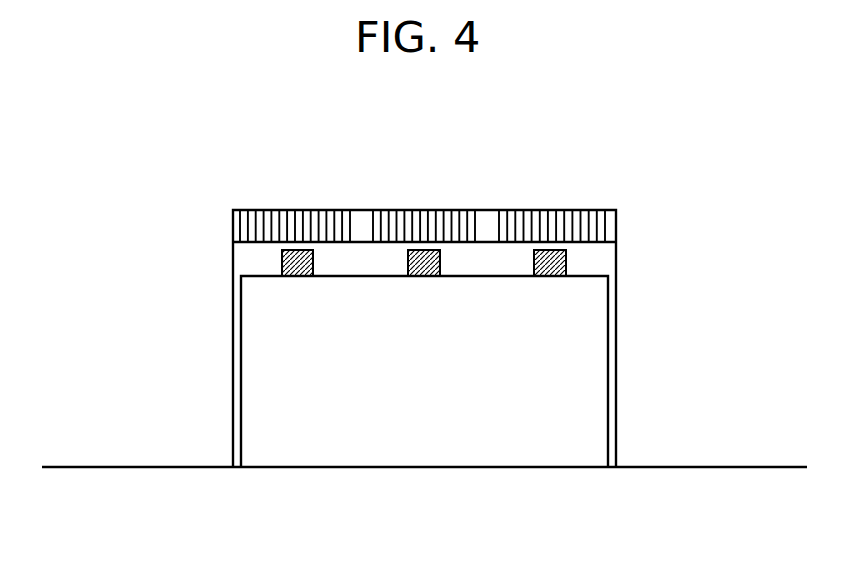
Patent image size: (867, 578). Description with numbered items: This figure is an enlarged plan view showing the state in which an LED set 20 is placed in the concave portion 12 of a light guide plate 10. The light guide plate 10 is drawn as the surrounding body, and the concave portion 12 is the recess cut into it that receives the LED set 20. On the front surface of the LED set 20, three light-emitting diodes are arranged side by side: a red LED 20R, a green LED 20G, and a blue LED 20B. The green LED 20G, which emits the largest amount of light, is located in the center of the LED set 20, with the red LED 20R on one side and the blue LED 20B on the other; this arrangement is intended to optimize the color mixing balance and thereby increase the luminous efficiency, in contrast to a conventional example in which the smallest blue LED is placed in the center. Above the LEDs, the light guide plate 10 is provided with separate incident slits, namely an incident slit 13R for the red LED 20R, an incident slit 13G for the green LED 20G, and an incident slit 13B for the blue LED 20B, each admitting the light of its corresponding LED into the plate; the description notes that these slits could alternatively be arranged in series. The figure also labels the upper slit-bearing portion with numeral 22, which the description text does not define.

The light guide plate 10 is at (155, 456).
The concave portion 12 is at (616, 368).
The incident slit for the red LED 13R is at (285, 210).
The incident slit for the green LED 13G is at (423, 210).
The incident slit for the blue LED 13B is at (547, 210).
The LED set 20 is at (543, 447).
The red LED 20R is at (299, 267).
The green LED 20G is at (425, 267).
The blue LED 20B is at (550, 267).
The counter substrate 22 is at (605, 224).